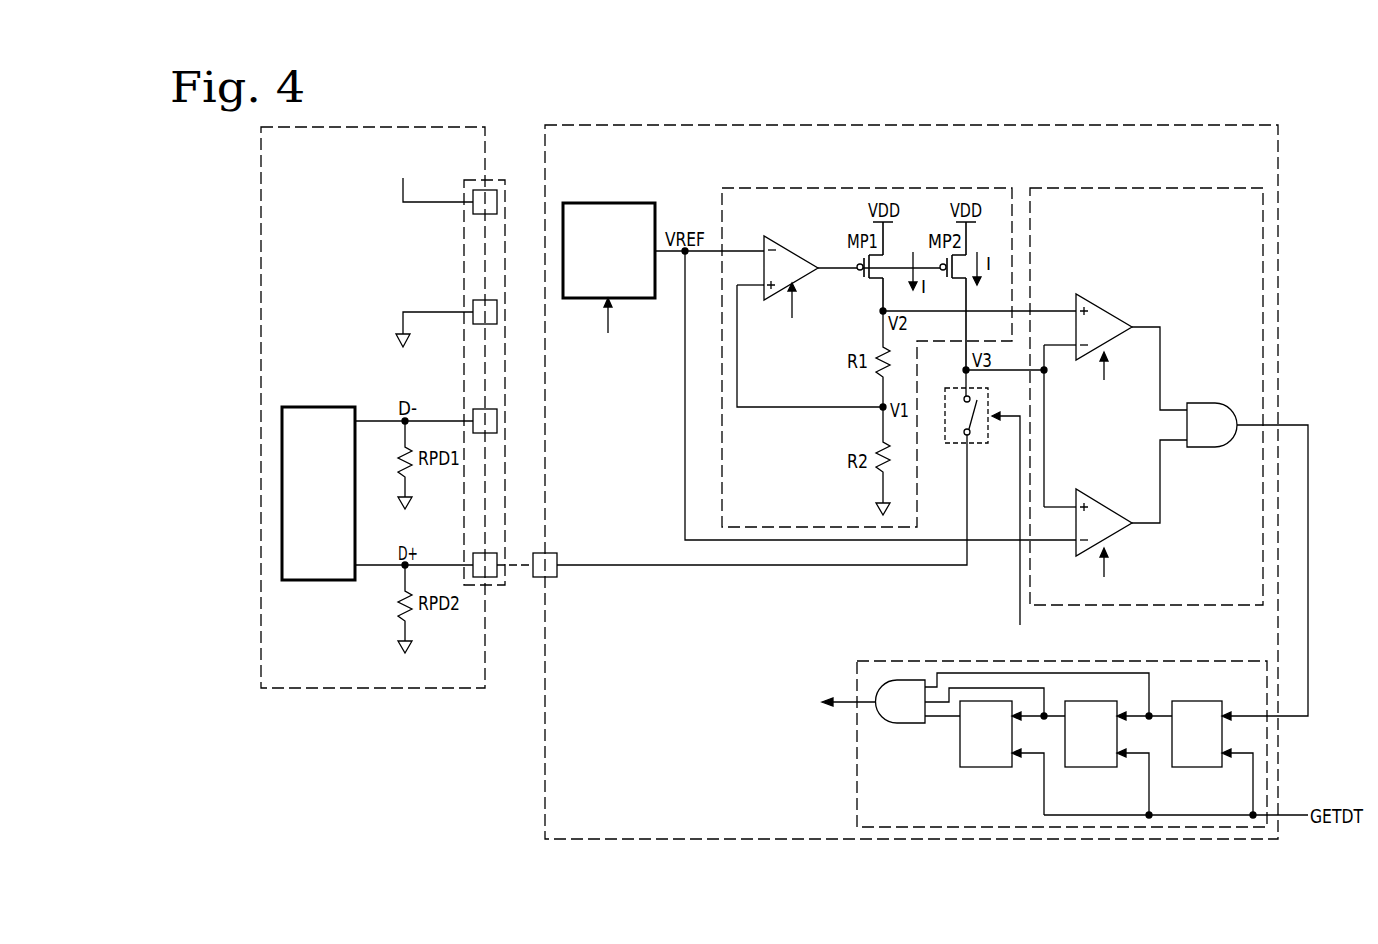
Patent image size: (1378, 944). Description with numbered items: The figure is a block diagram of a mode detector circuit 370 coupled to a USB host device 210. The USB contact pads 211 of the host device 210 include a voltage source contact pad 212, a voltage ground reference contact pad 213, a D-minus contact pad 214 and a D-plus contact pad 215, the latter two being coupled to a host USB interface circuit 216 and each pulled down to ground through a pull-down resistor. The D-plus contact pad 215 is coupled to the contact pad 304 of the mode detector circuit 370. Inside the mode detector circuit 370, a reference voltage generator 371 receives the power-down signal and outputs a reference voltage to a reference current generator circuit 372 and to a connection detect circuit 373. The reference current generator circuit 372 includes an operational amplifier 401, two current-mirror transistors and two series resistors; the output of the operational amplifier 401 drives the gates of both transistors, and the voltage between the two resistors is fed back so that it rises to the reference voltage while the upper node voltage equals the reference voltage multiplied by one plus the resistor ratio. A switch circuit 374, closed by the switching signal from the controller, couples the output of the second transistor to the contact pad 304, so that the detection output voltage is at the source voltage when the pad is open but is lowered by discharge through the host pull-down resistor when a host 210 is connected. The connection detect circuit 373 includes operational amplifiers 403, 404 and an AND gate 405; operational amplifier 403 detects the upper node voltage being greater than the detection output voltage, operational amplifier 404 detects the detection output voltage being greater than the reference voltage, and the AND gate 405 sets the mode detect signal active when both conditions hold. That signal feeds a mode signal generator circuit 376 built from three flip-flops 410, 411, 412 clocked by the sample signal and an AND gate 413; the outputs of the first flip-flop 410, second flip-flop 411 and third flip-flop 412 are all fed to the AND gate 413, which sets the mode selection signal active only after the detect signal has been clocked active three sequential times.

The USB host device 210 is at (387, 126).
The USB contact pads 211 is at (492, 180).
The voltage source VDD contact pad 212 is at (473, 214).
The voltage ground reference VSS contact pad 213 is at (475, 300).
The D− contact pad 214 is at (478, 409).
The D+ contact pad 215 is at (478, 553).
The host USB interface circuit 216 is at (305, 407).
The contact pad 304 is at (555, 578).
The mode detector circuit 370 is at (1128, 125).
The reference voltage generator 371 is at (617, 203).
The reference current generator circuit 372 is at (960, 188).
The connection detect circuit 373 is at (1172, 188).
The switch circuit 374 is at (958, 444).
The mode signal generator circuit 376 is at (1173, 661).
The operational amplifier 401 is at (797, 248).
The operational amplifier 403 is at (1105, 308).
The operational amplifier 404 is at (1106, 503).
The AND gate 405 is at (1200, 403).
The first flip-flop 410 is at (1197, 767).
The second flip-flop 411 is at (1090, 767).
The third flip-flop 412 is at (985, 767).
The AND gate 413 is at (910, 723).